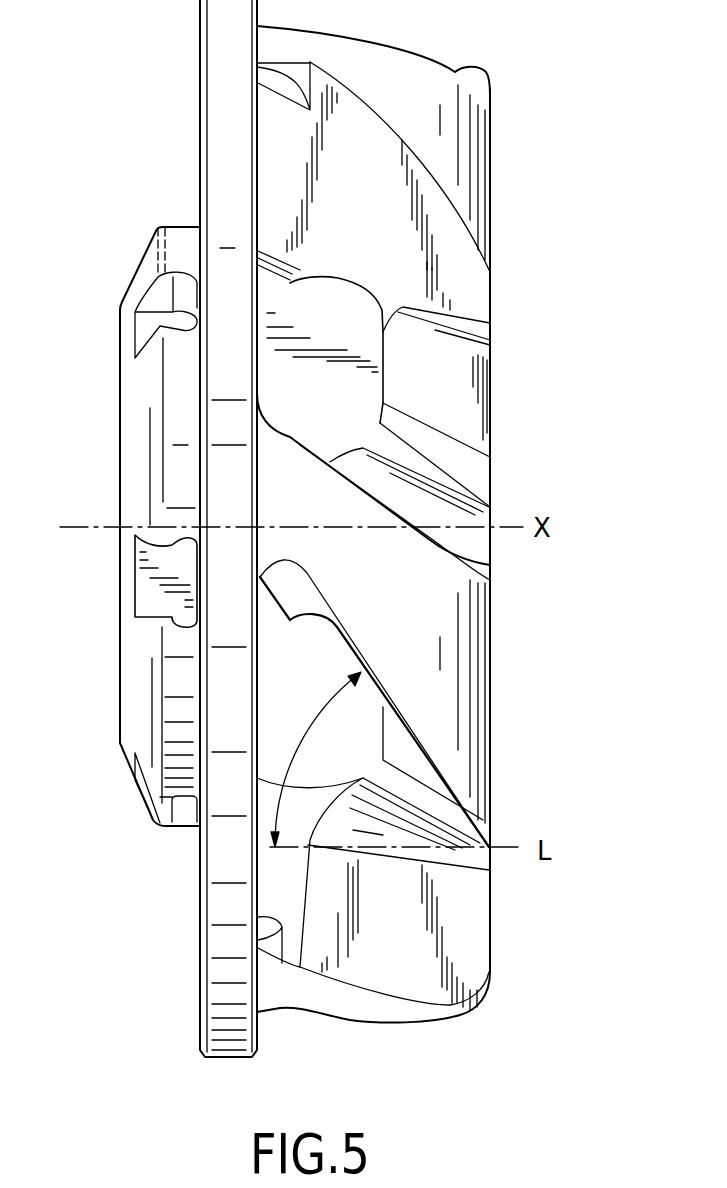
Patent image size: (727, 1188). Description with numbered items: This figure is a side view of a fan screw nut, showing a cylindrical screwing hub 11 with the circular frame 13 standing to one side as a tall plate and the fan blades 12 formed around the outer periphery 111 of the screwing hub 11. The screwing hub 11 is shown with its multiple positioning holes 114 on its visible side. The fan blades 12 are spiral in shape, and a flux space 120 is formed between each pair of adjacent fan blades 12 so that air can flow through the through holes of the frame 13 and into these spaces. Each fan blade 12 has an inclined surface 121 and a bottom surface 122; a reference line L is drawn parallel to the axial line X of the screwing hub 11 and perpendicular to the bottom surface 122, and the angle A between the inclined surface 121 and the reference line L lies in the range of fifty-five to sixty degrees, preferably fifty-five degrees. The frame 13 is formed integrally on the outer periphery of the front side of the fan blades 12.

The screwing hub 11 is at (127, 258).
The outer periphery 111 is at (122, 397).
The positioning holes 114 is at (155, 597).
The frame 13 is at (218, 133).
The fan blades 12 is at (470, 668).
The flux space 120 is at (320, 690).
The inclined surface 121 is at (390, 703).
The bottom surface 122 is at (490, 773).